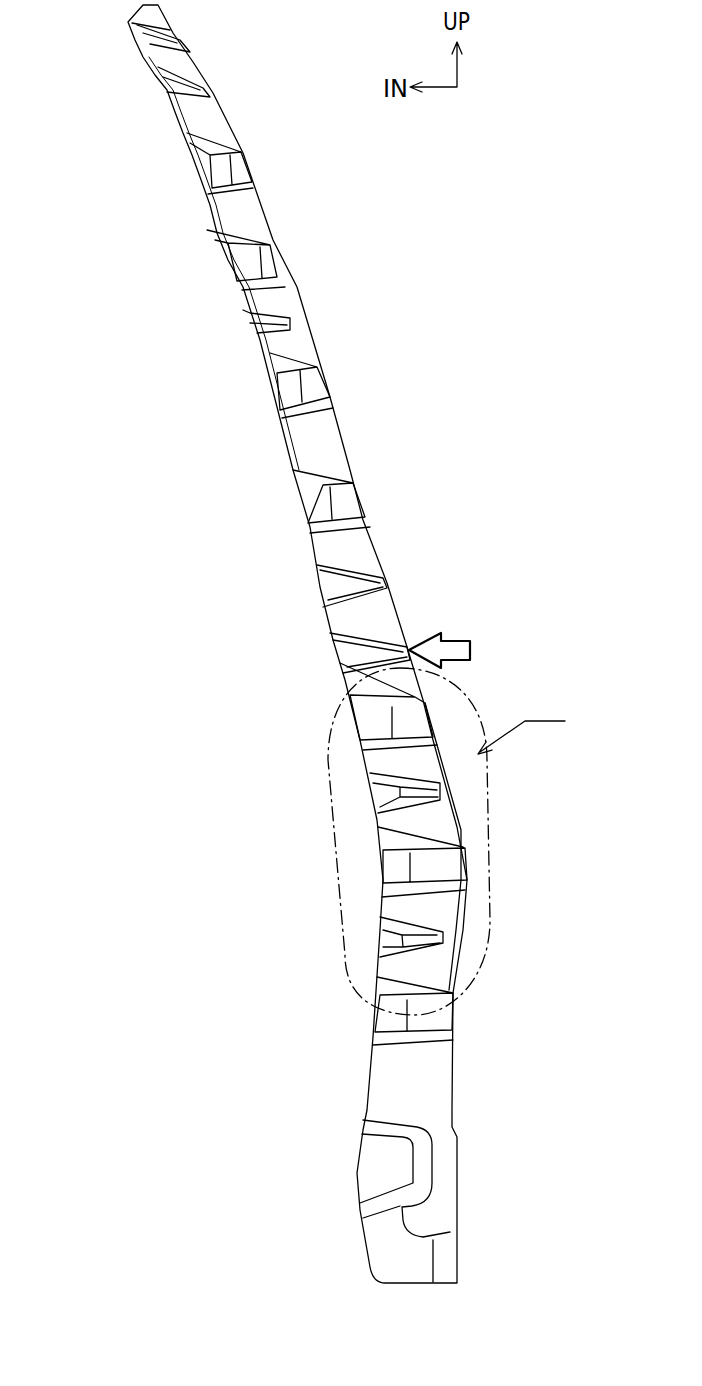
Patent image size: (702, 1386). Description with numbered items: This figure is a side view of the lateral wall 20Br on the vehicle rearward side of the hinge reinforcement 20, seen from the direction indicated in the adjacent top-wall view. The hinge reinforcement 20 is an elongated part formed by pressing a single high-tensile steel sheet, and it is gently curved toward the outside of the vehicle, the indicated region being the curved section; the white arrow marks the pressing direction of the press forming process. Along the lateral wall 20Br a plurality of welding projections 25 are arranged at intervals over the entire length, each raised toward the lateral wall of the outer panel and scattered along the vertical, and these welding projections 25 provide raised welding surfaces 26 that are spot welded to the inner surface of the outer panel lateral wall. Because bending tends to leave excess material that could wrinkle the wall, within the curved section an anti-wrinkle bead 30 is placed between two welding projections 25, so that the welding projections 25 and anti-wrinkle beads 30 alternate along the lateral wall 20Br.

The hinge reinforcement 20 is at (493, 229).
The lateral wall on the vehicle rearward side 20Br is at (362, 448).
The welding projection 25 is at (275, 669).
The raised welding surface 26 is at (247, 263).
The anti-wrinkle bead 30 is at (150, 38).